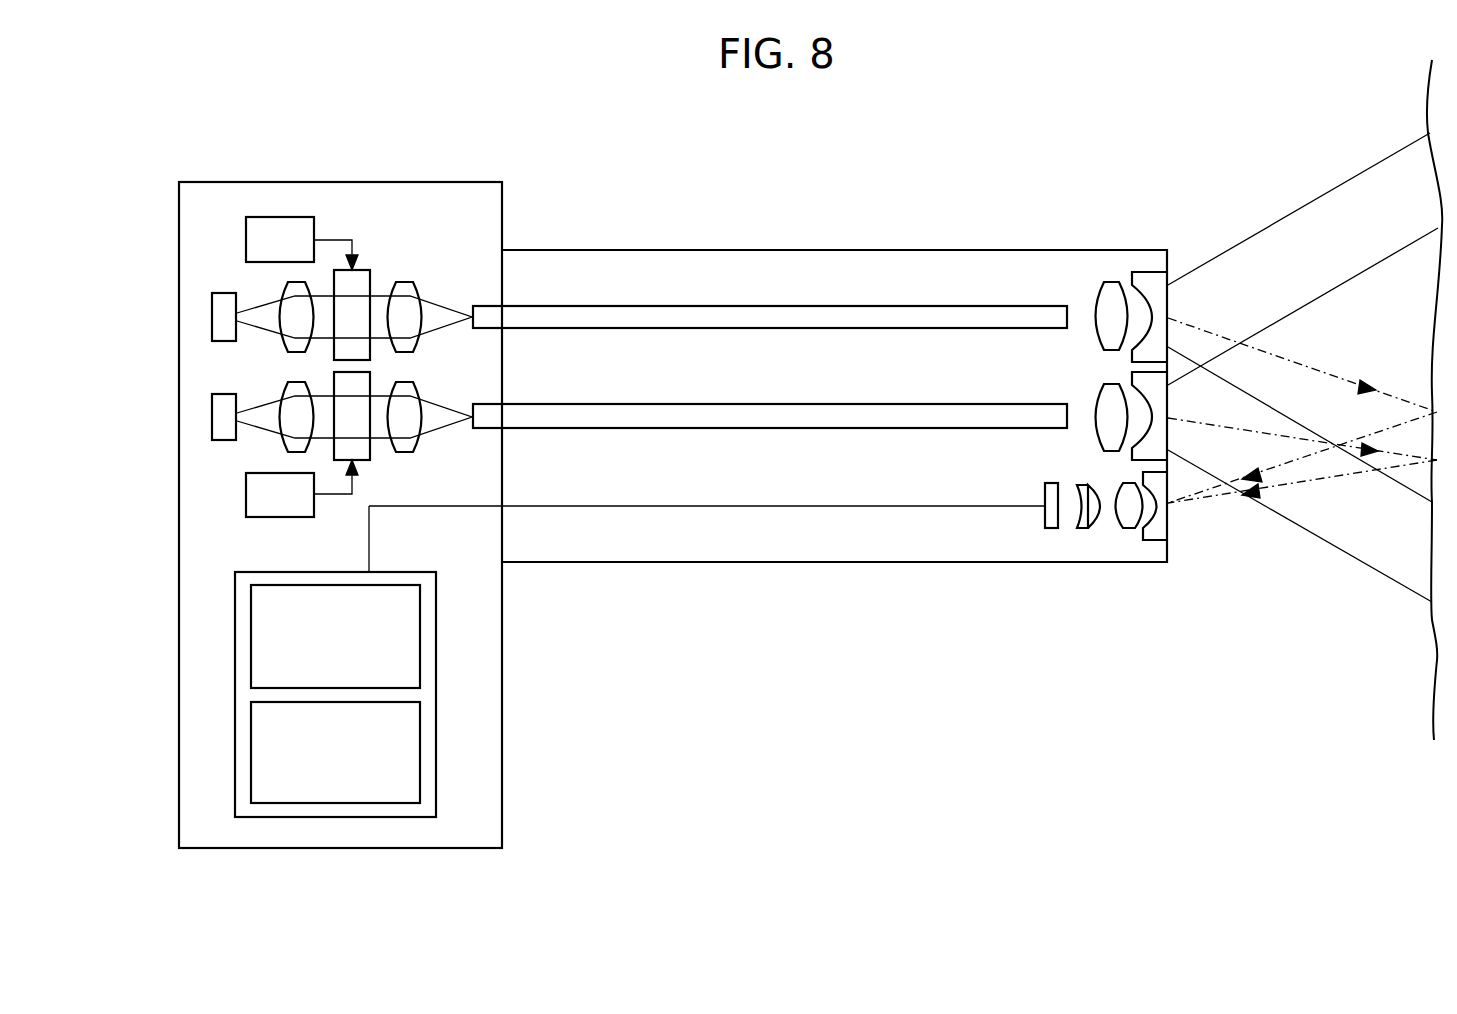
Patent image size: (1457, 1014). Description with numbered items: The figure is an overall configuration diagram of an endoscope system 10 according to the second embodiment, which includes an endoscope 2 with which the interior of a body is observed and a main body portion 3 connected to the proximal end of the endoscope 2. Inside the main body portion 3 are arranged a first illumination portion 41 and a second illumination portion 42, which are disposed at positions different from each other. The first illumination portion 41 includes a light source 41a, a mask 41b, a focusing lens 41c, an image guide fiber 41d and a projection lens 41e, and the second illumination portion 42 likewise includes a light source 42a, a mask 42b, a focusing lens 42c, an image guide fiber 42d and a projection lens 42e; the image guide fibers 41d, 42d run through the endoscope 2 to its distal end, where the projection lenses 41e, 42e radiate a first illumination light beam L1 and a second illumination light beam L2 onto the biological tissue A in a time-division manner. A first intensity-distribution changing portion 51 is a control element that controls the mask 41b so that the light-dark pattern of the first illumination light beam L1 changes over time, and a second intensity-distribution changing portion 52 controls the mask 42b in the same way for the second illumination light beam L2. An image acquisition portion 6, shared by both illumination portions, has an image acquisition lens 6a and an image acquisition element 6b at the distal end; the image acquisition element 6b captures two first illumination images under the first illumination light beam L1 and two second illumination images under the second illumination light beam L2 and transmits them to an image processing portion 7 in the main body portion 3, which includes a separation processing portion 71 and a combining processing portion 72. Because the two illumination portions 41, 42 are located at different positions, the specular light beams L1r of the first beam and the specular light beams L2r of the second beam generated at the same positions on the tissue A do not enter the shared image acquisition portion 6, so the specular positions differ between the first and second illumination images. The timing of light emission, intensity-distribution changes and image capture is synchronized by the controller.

The endoscope 2 is at (717, 250).
The main body portion 3 is at (410, 182).
The image acquisition portion 6 is at (1056, 553).
The image acquisition lens 6a is at (1128, 535).
The image acquisition element 6b is at (1050, 528).
The image processing portion 7 is at (282, 736).
The endoscope system 10 is at (910, 190).
The first illumination portion 41 is at (640, 283).
The light source 41a is at (212, 316).
The mask 41b is at (364, 270).
The focusing lens 41c is at (420, 284).
The image guide fiber 41d is at (648, 328).
The projection lens 41e is at (1114, 274).
The second illumination portion 42 is at (640, 432).
The light source 42a is at (212, 416).
The mask 42b is at (372, 458).
The focusing lens 42c is at (422, 385).
The image guide fiber 42d is at (733, 429).
The projection lens 42e is at (1086, 400).
The first intensity-distribution changing portion 51 is at (290, 217).
The second intensity-distribution changing portion 52 is at (246, 500).
The separation processing portion 71 is at (251, 627).
The combining processing portion 72 is at (251, 752).
The first illumination light beam L1 is at (1326, 192).
The second illumination light beam L2 is at (1316, 297).
The specular light beams of the first illumination light beam L1r is at (1278, 472).
The specular light beams of the second illumination light beam L2r is at (1350, 480).
The biological tissue A is at (1437, 653).